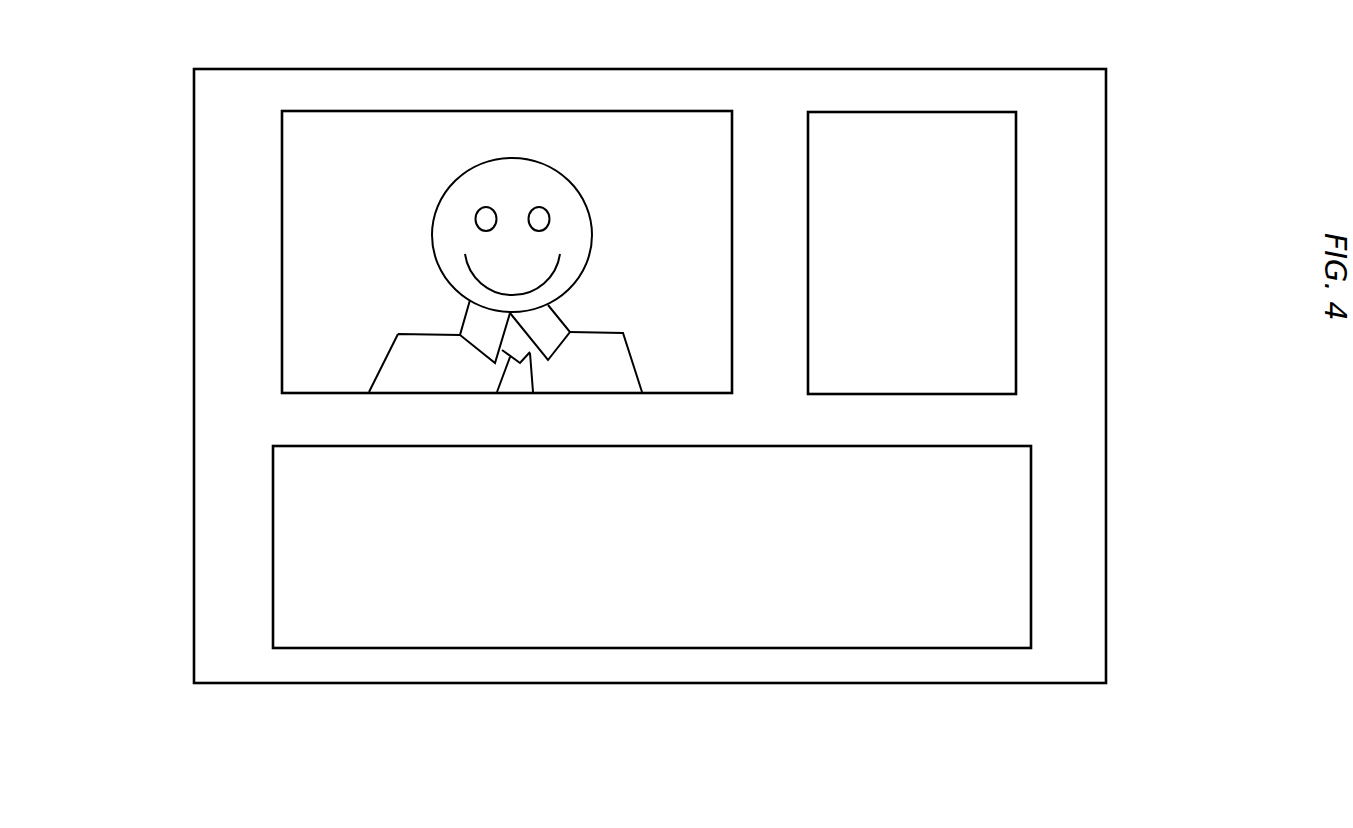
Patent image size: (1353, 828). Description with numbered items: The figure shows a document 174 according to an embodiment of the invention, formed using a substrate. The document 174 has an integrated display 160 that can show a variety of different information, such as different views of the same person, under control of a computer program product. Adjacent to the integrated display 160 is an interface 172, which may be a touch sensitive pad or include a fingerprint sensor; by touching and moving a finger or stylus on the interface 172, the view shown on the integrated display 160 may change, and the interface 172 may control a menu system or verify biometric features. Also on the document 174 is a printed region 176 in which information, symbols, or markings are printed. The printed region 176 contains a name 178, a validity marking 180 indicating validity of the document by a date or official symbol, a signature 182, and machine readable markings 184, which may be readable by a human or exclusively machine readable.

The integrated display 160 is at (585, 113).
The interface 172 is at (1016, 227).
The document 174 is at (1148, 80).
The printed region 176 is at (273, 517).
The name 178 is at (622, 473).
The validity marking 180 is at (640, 513).
The signature 182 is at (683, 555).
The machine readable markings 184 is at (858, 574).